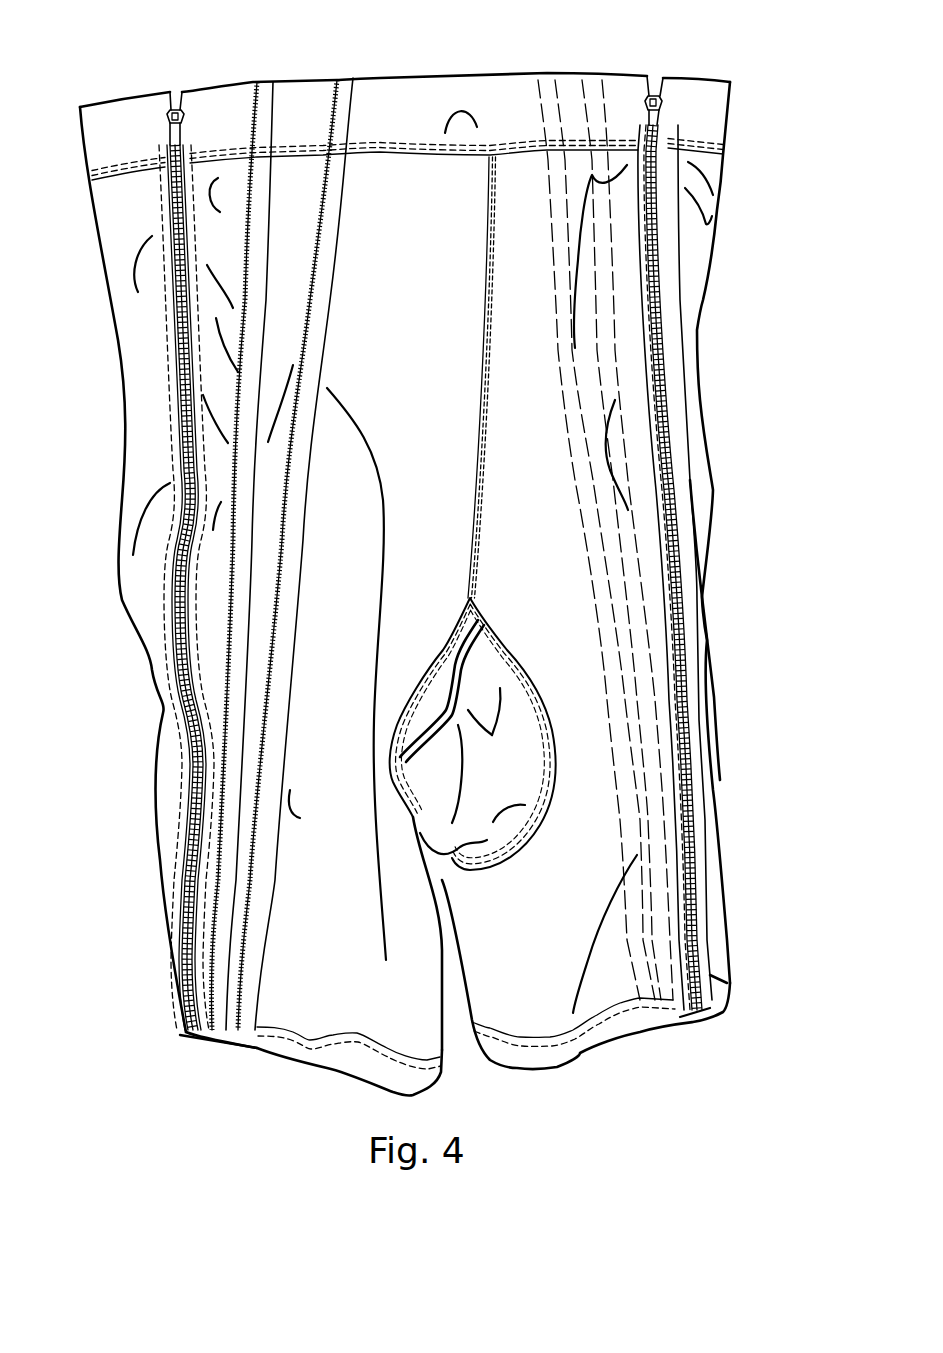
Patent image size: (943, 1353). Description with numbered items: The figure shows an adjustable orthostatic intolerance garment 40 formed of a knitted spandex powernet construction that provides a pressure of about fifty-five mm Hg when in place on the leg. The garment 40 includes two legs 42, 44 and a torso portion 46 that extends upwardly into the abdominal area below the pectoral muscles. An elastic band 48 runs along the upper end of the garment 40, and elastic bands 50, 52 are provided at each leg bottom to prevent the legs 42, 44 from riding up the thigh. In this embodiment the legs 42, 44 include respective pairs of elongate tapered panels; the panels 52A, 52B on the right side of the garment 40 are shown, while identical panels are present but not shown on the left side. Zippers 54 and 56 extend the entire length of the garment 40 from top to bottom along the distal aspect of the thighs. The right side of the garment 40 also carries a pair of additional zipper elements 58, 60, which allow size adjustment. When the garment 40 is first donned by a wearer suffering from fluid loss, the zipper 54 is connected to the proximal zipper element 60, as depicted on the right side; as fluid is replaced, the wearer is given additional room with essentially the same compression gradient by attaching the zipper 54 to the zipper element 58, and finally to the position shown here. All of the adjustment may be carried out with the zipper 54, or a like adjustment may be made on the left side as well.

The garment 40 is at (740, 522).
The leg 42 is at (297, 1008).
The leg 44 is at (657, 908).
The torso portion 46 is at (625, 273).
The elastic band 48 is at (433, 102).
The elastic band 50 is at (355, 1057).
The elastic band 52 is at (615, 1033).
The panel 52A is at (237, 123).
The panel 52B is at (310, 113).
The zipper 54 is at (170, 163).
The zipper 56 is at (657, 143).
The zipper element 58 is at (250, 223).
The zipper element 60 is at (307, 318).